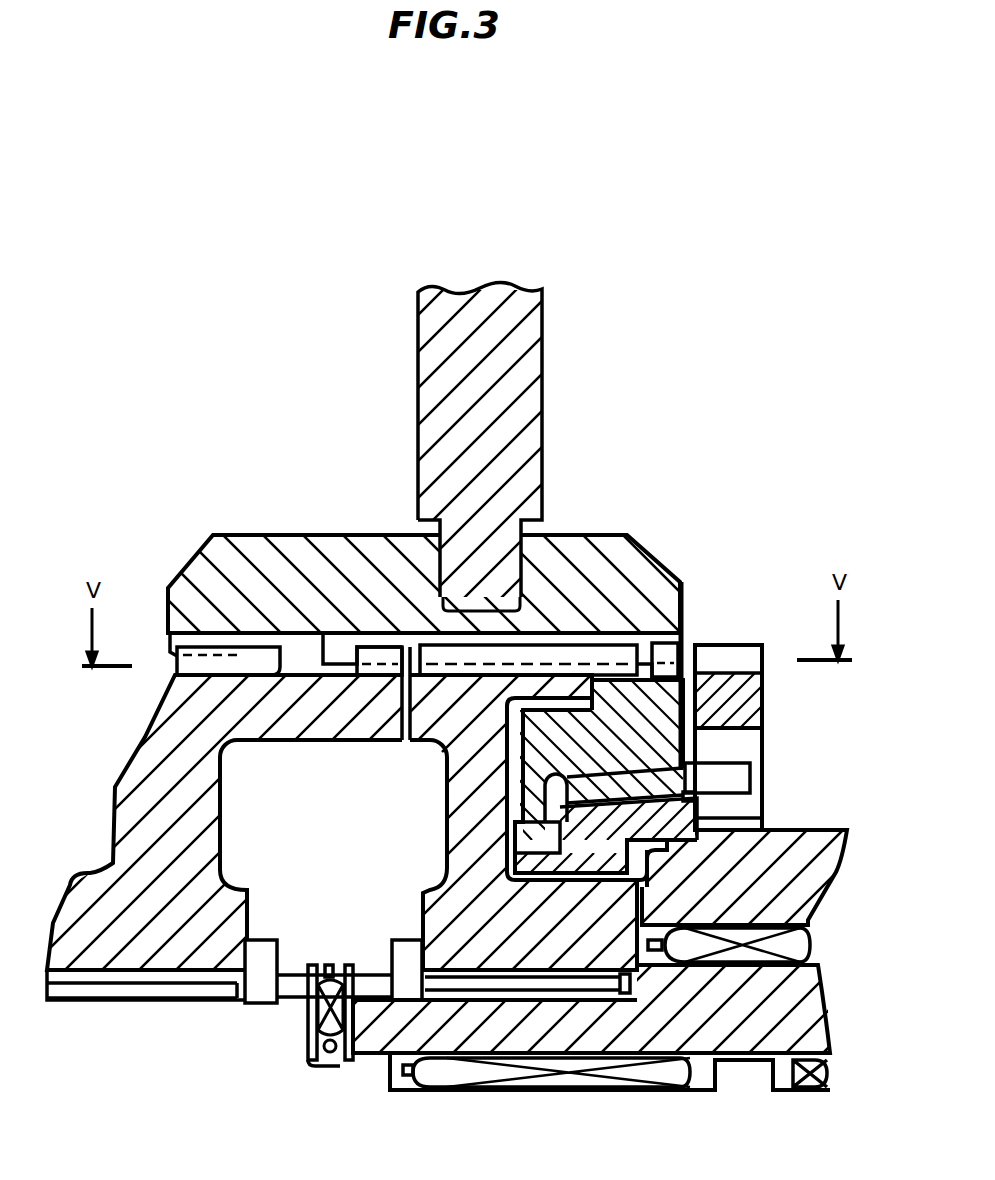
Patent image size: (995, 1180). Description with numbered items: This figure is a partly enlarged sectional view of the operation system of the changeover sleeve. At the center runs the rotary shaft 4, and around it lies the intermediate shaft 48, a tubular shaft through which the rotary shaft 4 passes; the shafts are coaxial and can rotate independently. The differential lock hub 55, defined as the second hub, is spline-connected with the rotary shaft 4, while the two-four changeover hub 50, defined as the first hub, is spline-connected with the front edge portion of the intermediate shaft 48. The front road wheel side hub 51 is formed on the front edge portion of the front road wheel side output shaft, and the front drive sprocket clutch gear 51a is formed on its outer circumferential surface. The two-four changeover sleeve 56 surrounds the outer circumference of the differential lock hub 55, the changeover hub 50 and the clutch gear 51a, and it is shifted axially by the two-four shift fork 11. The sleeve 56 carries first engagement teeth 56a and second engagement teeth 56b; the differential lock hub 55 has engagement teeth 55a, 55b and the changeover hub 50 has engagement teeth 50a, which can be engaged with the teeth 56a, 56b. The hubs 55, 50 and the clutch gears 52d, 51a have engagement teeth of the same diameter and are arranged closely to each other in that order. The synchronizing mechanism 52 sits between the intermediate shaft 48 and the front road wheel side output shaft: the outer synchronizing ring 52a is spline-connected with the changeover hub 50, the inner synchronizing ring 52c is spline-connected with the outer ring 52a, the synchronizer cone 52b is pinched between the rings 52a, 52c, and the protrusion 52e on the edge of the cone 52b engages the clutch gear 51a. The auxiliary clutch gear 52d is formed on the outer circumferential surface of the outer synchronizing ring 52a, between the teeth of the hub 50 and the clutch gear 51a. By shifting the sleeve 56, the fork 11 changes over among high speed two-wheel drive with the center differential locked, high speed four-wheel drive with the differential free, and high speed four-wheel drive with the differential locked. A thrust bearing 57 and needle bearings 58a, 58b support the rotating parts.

The 2/4 shift fork 11 is at (543, 428).
The 2/4 changeover sleeve 56 is at (238, 548).
The second engagement teeth 56b is at (310, 633).
The first engagement teeth 56a is at (645, 648).
The differential lock hub 55 is at (205, 845).
The engagement teeth 55a is at (170, 672).
The engagement teeth 55b is at (392, 656).
The 2/4 changeover hub 50 is at (445, 794).
The engagement teeth 50a is at (540, 660).
The synchronizing mechanism 52 is at (465, 835).
The outer synchronizing ring 52a is at (672, 692).
The synchronizer cone 52b is at (700, 806).
The inner synchronizing ring 52c is at (695, 821).
The outer synchronizer ring clutch gear 52d is at (667, 652).
The protrusion 52e is at (742, 780).
The front road wheel side hub 51 is at (763, 711).
The front drive sprocket clutch gear 51a is at (755, 653).
The intermediate shaft 48 is at (737, 1050).
The thrust bearing 57 is at (318, 1062).
The needle bearing 58a is at (575, 1090).
The needle bearing 58b is at (775, 962).
The rotary shaft 4 is at (180, 1048).